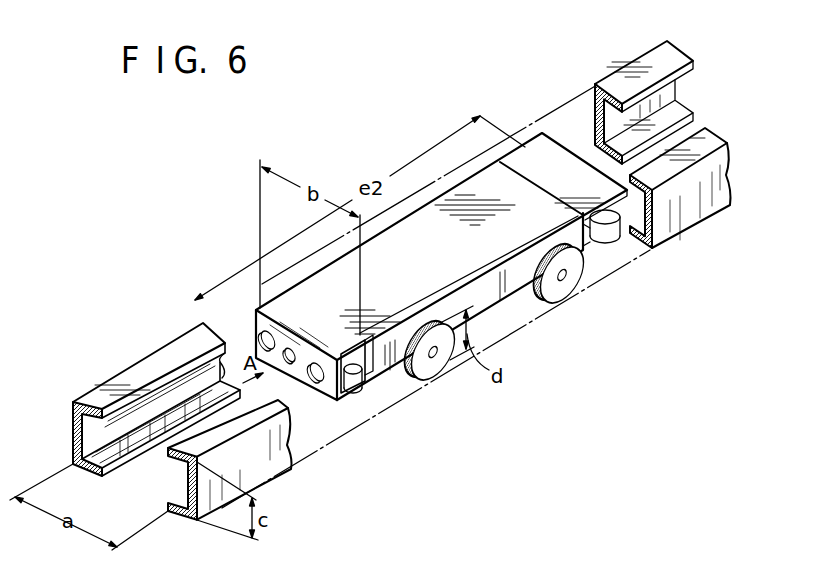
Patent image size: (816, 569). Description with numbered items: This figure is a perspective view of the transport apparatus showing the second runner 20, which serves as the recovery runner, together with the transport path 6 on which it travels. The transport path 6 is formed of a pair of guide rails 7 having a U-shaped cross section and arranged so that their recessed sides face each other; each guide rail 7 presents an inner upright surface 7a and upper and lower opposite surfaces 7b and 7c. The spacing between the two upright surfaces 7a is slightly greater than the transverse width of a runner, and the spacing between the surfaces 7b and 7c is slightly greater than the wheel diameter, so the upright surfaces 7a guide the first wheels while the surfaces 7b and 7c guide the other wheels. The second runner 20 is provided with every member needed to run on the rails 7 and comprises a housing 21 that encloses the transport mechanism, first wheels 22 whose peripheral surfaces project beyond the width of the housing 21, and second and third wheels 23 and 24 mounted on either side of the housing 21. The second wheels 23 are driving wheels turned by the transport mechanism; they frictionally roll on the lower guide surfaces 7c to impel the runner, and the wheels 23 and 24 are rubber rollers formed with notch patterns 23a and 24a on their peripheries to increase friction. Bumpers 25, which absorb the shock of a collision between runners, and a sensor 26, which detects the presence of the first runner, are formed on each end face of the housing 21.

The transport path 6 is at (698, 91).
The guide rail 7 is at (633, 68).
The inner upright surface 7a is at (72, 438).
The upper opposite surface 7b is at (170, 461).
The lower opposite surface 7c is at (88, 472).
The second runner 20 is at (410, 212).
The housing 21 is at (460, 197).
The first wheel 22 is at (612, 232).
The second wheel 23 is at (440, 366).
The notch pattern 23a is at (413, 383).
The third wheel 24 is at (570, 285).
The notch pattern 24a is at (547, 310).
The bumper 25 is at (274, 334).
The sensor 26 is at (291, 362).